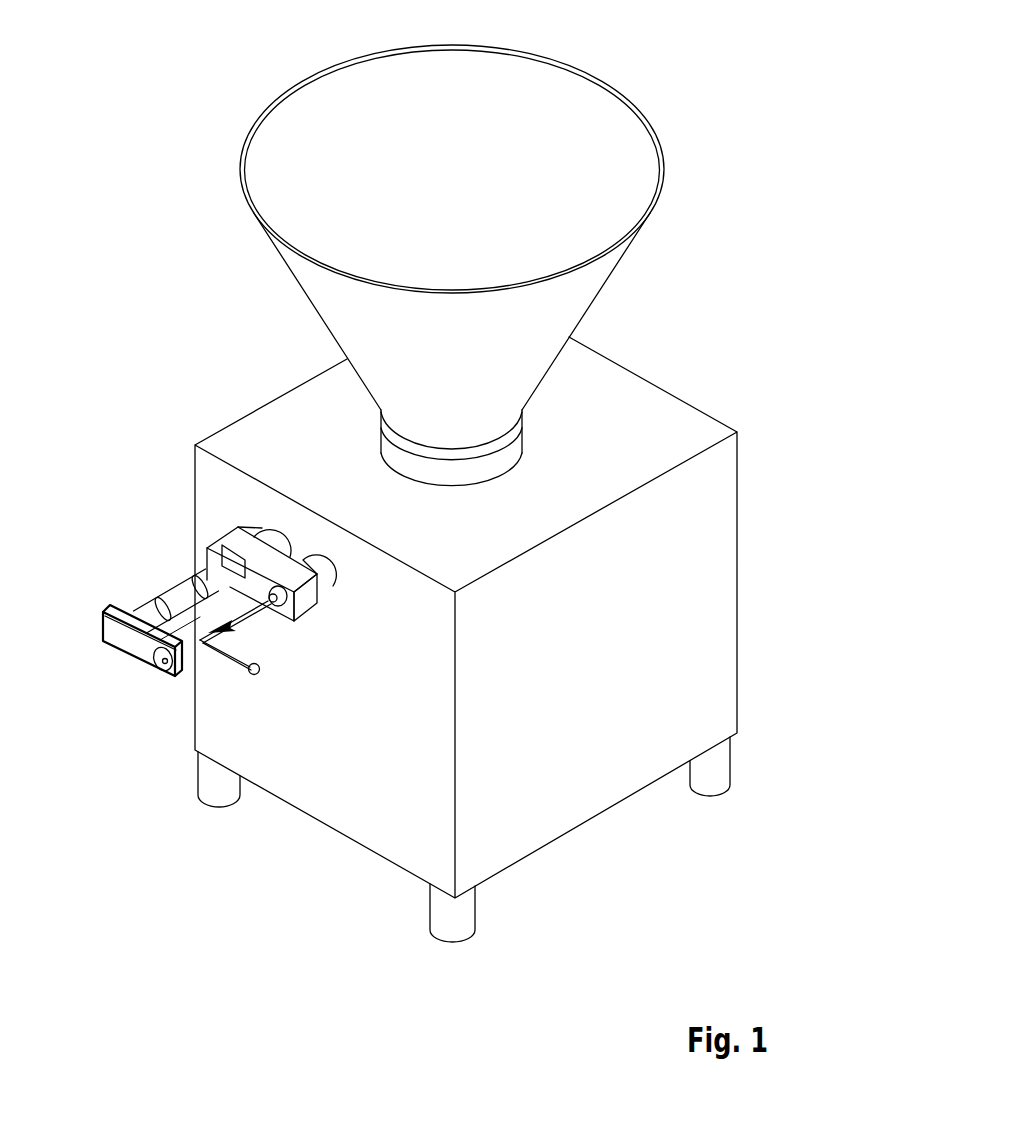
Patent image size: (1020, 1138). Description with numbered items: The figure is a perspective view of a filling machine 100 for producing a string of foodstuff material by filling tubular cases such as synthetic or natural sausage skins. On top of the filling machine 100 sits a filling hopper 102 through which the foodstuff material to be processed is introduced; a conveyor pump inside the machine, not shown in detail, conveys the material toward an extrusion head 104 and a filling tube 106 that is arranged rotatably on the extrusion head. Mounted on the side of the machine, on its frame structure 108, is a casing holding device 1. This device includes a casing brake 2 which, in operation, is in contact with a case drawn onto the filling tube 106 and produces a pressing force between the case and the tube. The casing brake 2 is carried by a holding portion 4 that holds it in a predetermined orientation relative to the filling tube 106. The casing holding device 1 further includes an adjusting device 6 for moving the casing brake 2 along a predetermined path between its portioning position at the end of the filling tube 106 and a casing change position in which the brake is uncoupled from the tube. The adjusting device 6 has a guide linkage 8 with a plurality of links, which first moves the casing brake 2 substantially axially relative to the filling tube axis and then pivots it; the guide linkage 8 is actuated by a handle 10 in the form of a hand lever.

The casing holding device 1 is at (142, 574).
The casing brake 2 is at (162, 666).
The holding portion 4 is at (116, 605).
The adjusting device 6 is at (231, 629).
The guide linkage 8 is at (168, 625).
The handle 10 is at (235, 648).
The filling machine 100 is at (729, 345).
The filling hopper 102 is at (617, 142).
The extrusion head 104 is at (327, 578).
The filling tube 106 is at (245, 613).
The frame structure 108 is at (642, 757).